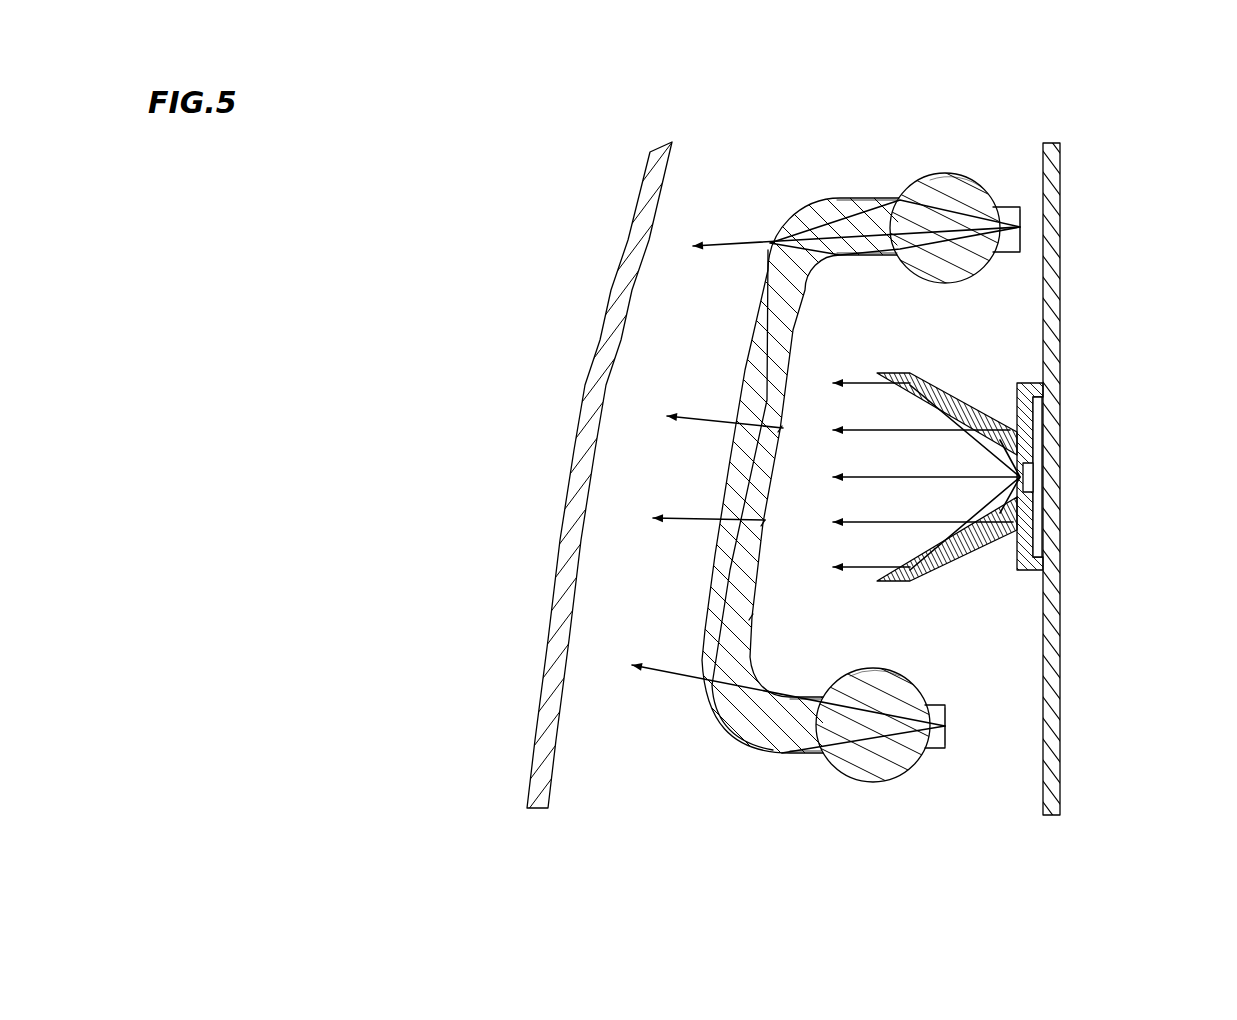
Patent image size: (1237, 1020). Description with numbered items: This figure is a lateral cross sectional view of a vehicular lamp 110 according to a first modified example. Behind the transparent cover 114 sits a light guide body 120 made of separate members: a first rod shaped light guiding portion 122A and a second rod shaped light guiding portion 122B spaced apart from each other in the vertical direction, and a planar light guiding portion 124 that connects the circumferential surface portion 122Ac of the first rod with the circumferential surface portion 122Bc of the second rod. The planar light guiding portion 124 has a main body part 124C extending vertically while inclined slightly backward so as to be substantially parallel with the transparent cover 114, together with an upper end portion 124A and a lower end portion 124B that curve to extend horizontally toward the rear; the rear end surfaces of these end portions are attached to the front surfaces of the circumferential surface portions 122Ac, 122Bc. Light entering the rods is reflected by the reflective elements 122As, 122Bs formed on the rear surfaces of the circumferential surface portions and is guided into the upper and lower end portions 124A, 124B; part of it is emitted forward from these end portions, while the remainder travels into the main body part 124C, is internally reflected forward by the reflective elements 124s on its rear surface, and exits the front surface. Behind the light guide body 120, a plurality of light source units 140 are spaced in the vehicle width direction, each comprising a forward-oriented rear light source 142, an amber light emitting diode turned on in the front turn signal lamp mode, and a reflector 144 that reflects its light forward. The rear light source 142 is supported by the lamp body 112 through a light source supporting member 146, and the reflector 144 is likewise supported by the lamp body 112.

The vehicular lamp 110 is at (410, 184).
The lamp body 112 is at (1063, 352).
The transparent cover 114 is at (575, 425).
The light guide body 120 is at (705, 363).
The first rod shaped light guiding portion 122A is at (910, 173).
The circumferential surface portion of the first rod shaped light guiding portion 122Ac is at (963, 170).
The reflective elements of the first rod shaped light guiding portion 122As is at (1022, 243).
The second rod shaped light guiding portion 122B is at (833, 768).
The circumferential surface portion of the second rod shaped light guiding portion 122Bc is at (907, 675).
The reflective elements of the second rod shaped light guiding portion 122Bs is at (947, 733).
The planar light guiding portion 124 is at (725, 480).
The upper end portion 124A is at (865, 240).
The lower end portion 124B is at (797, 720).
The main body part 124C is at (727, 542).
The reflective elements of the planar light guiding portion 124s is at (750, 617).
The light source unit 140 is at (957, 383).
The rear light source 142 is at (997, 468).
The reflector 144 is at (965, 570).
The light source supporting member 146 is at (1037, 513).